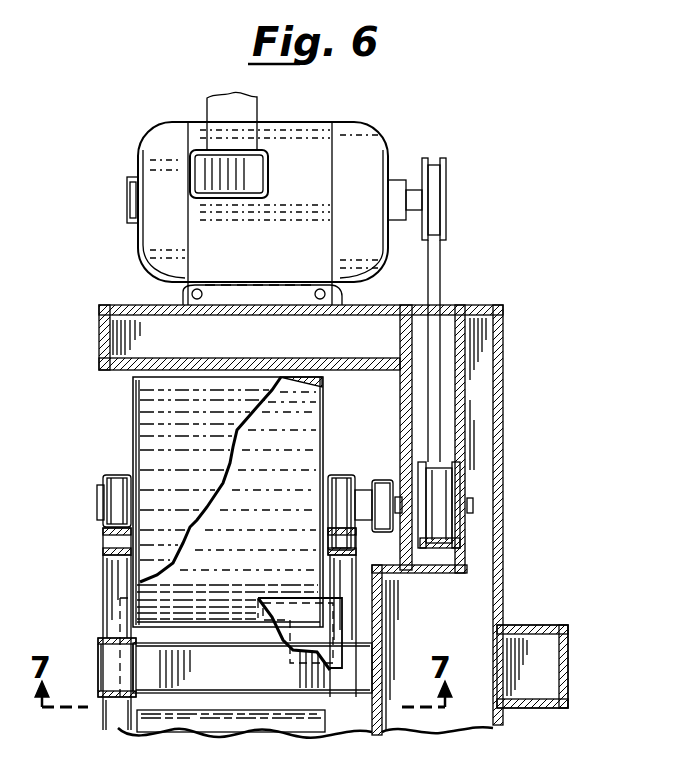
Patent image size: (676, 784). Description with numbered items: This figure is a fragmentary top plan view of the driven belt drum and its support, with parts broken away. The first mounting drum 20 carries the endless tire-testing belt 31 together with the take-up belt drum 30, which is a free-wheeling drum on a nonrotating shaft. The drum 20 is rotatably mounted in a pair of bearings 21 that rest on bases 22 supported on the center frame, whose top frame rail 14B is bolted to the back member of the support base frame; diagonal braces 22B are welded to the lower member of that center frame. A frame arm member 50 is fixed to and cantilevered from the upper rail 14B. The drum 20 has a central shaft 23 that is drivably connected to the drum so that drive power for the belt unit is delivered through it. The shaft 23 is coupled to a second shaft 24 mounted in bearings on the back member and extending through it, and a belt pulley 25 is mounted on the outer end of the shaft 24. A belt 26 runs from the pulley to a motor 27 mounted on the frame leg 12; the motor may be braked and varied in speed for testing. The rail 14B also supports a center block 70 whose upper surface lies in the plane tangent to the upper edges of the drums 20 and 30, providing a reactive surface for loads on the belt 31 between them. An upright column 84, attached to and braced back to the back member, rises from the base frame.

The motor 27 is at (165, 148).
The second leg 12 is at (99, 349).
The first mounting drum 20 is at (300, 413).
The belt 31 is at (132, 418).
The bearings 21 is at (112, 474).
The central shaft 23 is at (99, 505).
The bases 22 is at (104, 545).
The diagonal braces 22B is at (103, 590).
The frame arm member 50 is at (110, 730).
The second shaft 24 is at (396, 478).
The belt pulley 25 is at (450, 543).
The belt 26 is at (440, 400).
The center block 70 is at (335, 620).
The top frame rail 14B is at (252, 684).
The take-up belt drum 30 is at (210, 735).
The upright column 84 is at (568, 672).